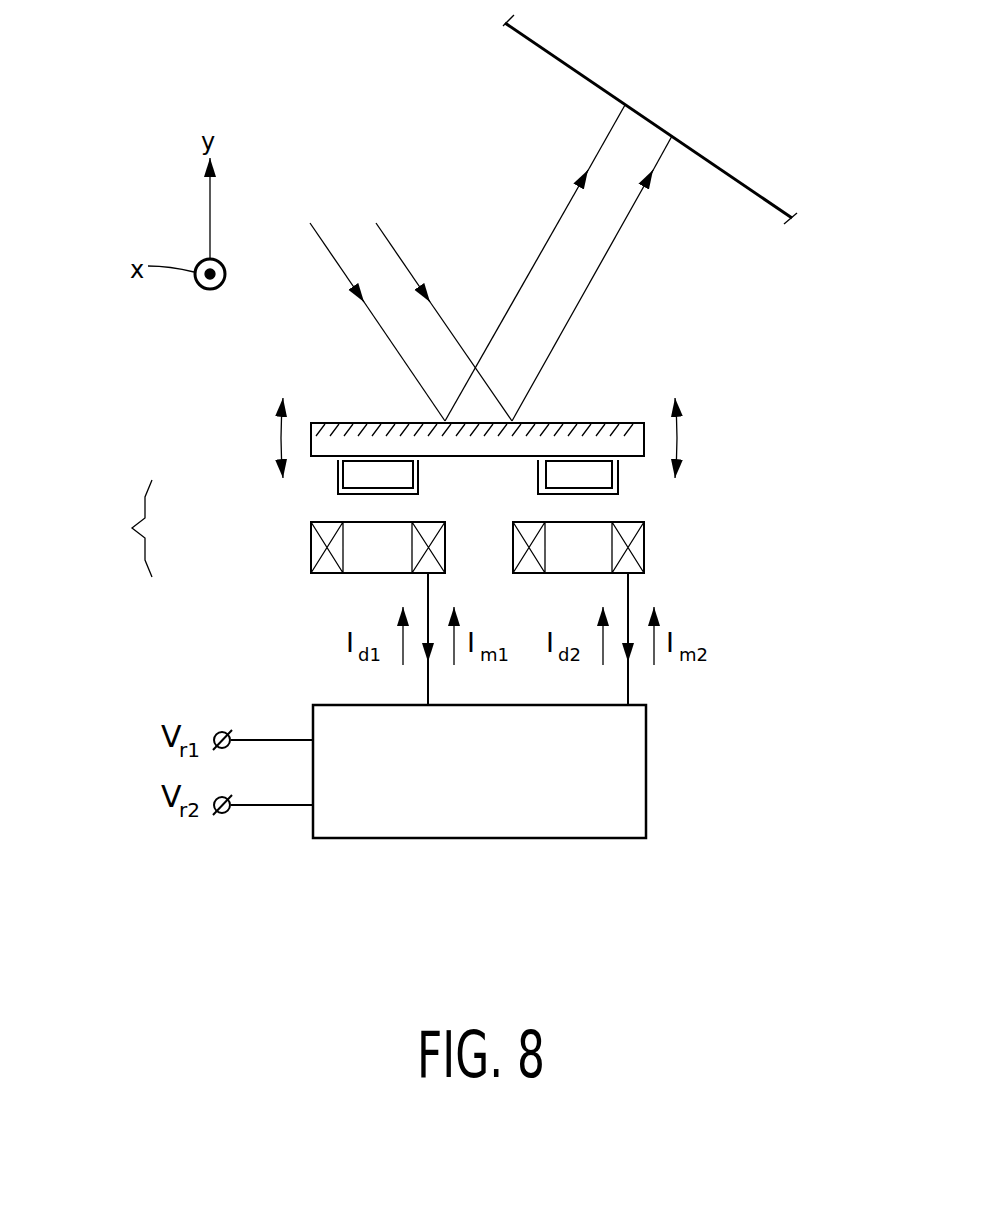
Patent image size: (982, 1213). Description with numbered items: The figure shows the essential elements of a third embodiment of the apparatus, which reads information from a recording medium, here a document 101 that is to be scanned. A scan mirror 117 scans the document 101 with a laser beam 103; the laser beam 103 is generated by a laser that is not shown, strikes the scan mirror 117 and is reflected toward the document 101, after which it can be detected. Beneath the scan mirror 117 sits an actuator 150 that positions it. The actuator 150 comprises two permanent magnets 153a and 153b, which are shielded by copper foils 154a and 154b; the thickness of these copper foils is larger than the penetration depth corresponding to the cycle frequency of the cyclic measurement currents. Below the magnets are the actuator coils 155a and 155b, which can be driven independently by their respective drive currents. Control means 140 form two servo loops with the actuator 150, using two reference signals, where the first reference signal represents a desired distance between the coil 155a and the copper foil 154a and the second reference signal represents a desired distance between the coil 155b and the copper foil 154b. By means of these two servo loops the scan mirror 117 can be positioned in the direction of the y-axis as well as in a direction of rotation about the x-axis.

The document 101 is at (543, 43).
The laser beam 103 is at (390, 240).
The scan mirror 117 is at (597, 421).
The actuator 150 is at (119, 528).
The permanent magnet 153a is at (350, 478).
The copper foil 154a is at (337, 495).
The actuator coil 155a is at (311, 552).
The permanent magnet 153b is at (605, 477).
The copper foil 154b is at (618, 495).
The actuator coil 155b is at (645, 548).
The control means 140 is at (486, 838).